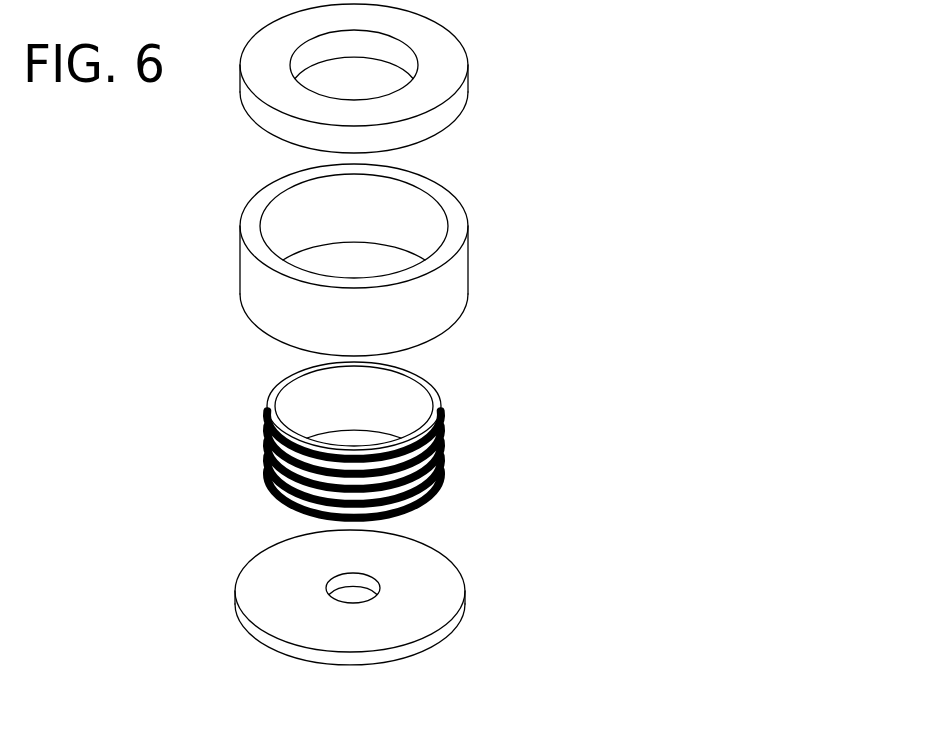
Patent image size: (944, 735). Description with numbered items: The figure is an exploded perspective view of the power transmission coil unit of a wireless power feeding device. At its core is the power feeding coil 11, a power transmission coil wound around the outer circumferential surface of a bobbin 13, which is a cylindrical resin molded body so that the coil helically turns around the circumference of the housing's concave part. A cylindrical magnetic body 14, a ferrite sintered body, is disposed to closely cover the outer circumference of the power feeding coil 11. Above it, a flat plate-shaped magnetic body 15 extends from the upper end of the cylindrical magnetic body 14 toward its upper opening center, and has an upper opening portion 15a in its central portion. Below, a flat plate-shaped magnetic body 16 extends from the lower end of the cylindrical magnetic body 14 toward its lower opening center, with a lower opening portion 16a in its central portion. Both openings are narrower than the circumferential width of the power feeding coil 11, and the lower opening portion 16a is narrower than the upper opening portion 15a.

The power feeding coil 11 is at (440, 455).
The bobbin 13 is at (412, 393).
The cylindrical magnetic body 14 is at (468, 274).
The flat plate-shaped magnetic body 15 is at (468, 85).
The upper opening portion 15a is at (355, 83).
The flat plate-shaped magnetic body 16 is at (465, 601).
The lower opening portion 16a is at (350, 591).